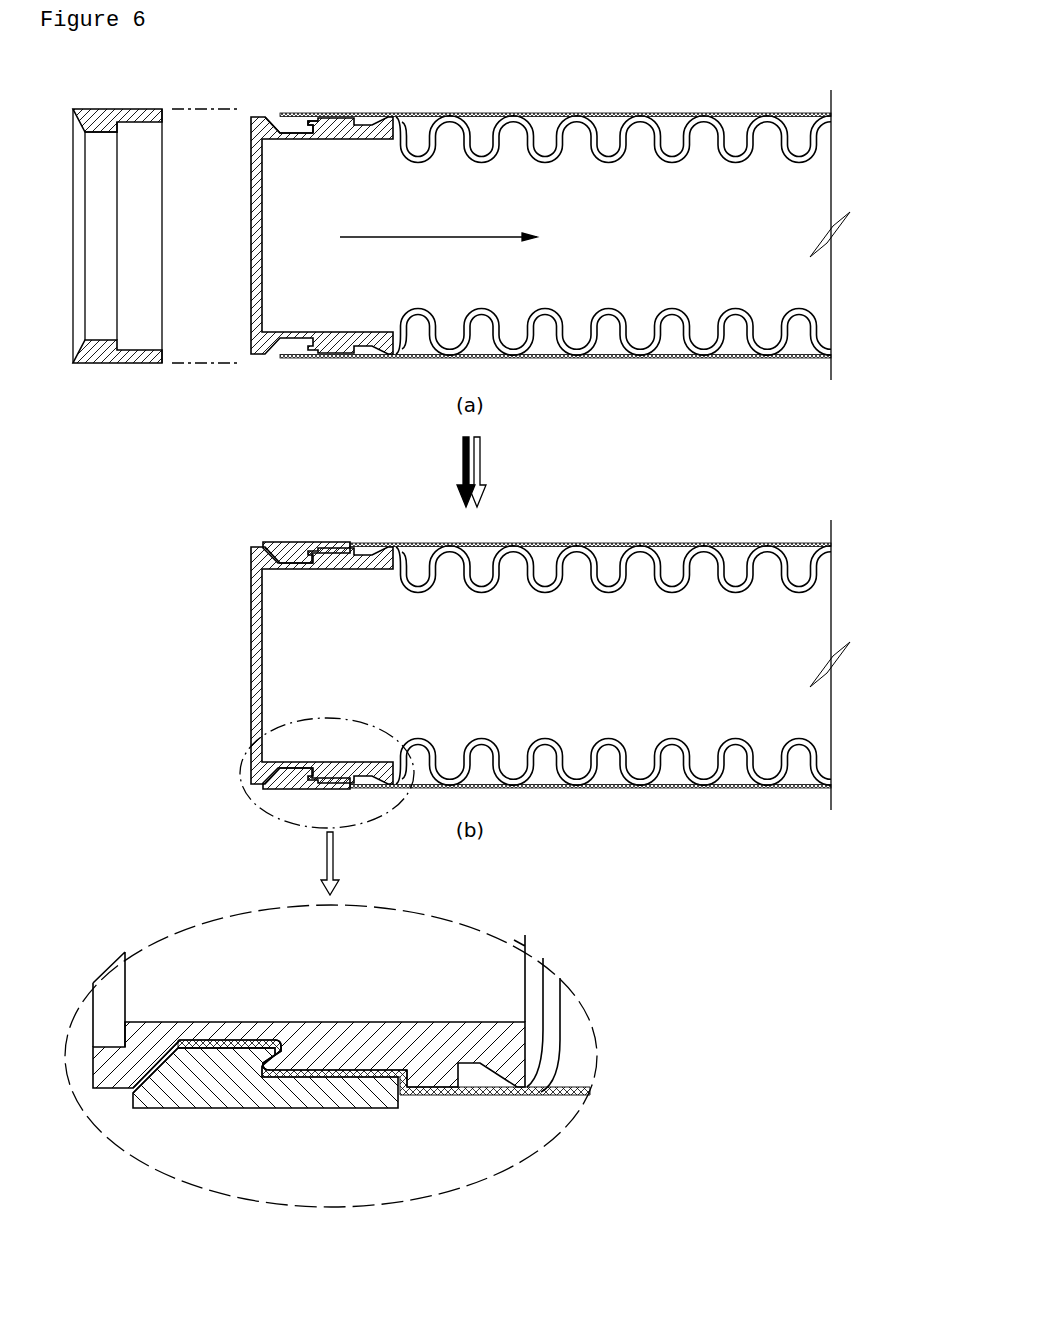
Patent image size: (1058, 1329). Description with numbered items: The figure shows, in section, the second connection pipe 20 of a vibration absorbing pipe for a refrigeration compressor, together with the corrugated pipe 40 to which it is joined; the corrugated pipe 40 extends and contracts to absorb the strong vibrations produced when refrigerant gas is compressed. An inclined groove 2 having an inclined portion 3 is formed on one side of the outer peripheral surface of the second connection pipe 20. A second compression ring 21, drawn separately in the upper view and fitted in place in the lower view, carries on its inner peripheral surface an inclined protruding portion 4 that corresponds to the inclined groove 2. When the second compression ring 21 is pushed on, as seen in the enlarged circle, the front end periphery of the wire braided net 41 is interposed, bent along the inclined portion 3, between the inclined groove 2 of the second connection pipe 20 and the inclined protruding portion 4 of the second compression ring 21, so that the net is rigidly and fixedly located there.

In FIG. 6a, the inclined groove 2 is at (283, 126).
In FIG. 6b, the inclined groove 2 is at (186, 1043).
In FIG. 6a, the inclined portion 3 is at (312, 122).
In FIG. 6b, the inclined portion 3 is at (268, 1066).
In FIG. 6a, the inclined protruding portion 4 is at (118, 129).
In FIG. 6b, the inclined protruding portion 4 is at (217, 1058).
In FIG. 6a, the second connection pipe 20 is at (233, 245).
In FIG. 6b, the second connection pipe 20 is at (233, 655).
In FIG. 6a, the second compression ring 21 is at (118, 108).
In FIG. 6b, the second compression ring 21 is at (318, 542).
In FIG. 6a, the corrugated pipe 40 is at (545, 165).
In FIG. 6b, the corrugated pipe 40 is at (545, 595).
In FIG. 6a, the wire braided net 41 is at (541, 113).
In FIG. 6b, the wire braided net 41 is at (541, 543).